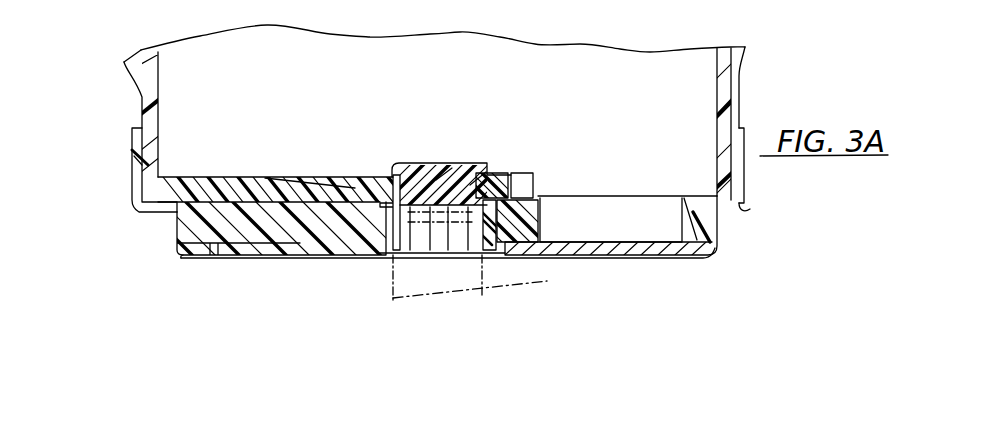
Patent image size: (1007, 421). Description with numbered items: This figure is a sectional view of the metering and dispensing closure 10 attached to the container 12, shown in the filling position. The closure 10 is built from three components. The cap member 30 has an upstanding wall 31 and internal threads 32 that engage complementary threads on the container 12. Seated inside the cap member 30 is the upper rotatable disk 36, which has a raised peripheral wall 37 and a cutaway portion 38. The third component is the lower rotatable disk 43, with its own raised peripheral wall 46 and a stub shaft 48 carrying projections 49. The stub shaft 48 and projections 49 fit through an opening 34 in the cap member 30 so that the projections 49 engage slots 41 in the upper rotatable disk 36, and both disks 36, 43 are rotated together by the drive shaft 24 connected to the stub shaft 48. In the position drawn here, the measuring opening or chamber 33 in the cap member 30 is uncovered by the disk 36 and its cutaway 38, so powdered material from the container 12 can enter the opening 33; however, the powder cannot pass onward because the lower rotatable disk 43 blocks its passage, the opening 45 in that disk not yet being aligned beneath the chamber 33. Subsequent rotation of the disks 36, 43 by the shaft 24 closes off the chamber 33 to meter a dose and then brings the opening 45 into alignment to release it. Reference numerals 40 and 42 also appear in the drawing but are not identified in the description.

The metering and dispensing closure 10 is at (100, 208).
The container 12 is at (737, 66).
The drive shaft 24 is at (483, 279).
The cap member 30 is at (131, 158).
The upstanding wall 31 is at (133, 129).
The internal threads 32 is at (733, 117).
The measuring opening or chamber 33 is at (543, 224).
The opening 34 is at (367, 242).
The rotatable disk 36 is at (170, 187).
The raised peripheral wall 37 is at (173, 177).
The cutaway portion 38 is at (537, 185).
The boss 40 is at (410, 163).
The slots 41 is at (479, 166).
The seal 42 is at (512, 173).
The rotatable disk 43 is at (176, 229).
The opening 45 is at (308, 258).
The raised peripheral wall 46 is at (746, 209).
The stub shaft 48 is at (462, 122).
The projections 49 is at (500, 158).